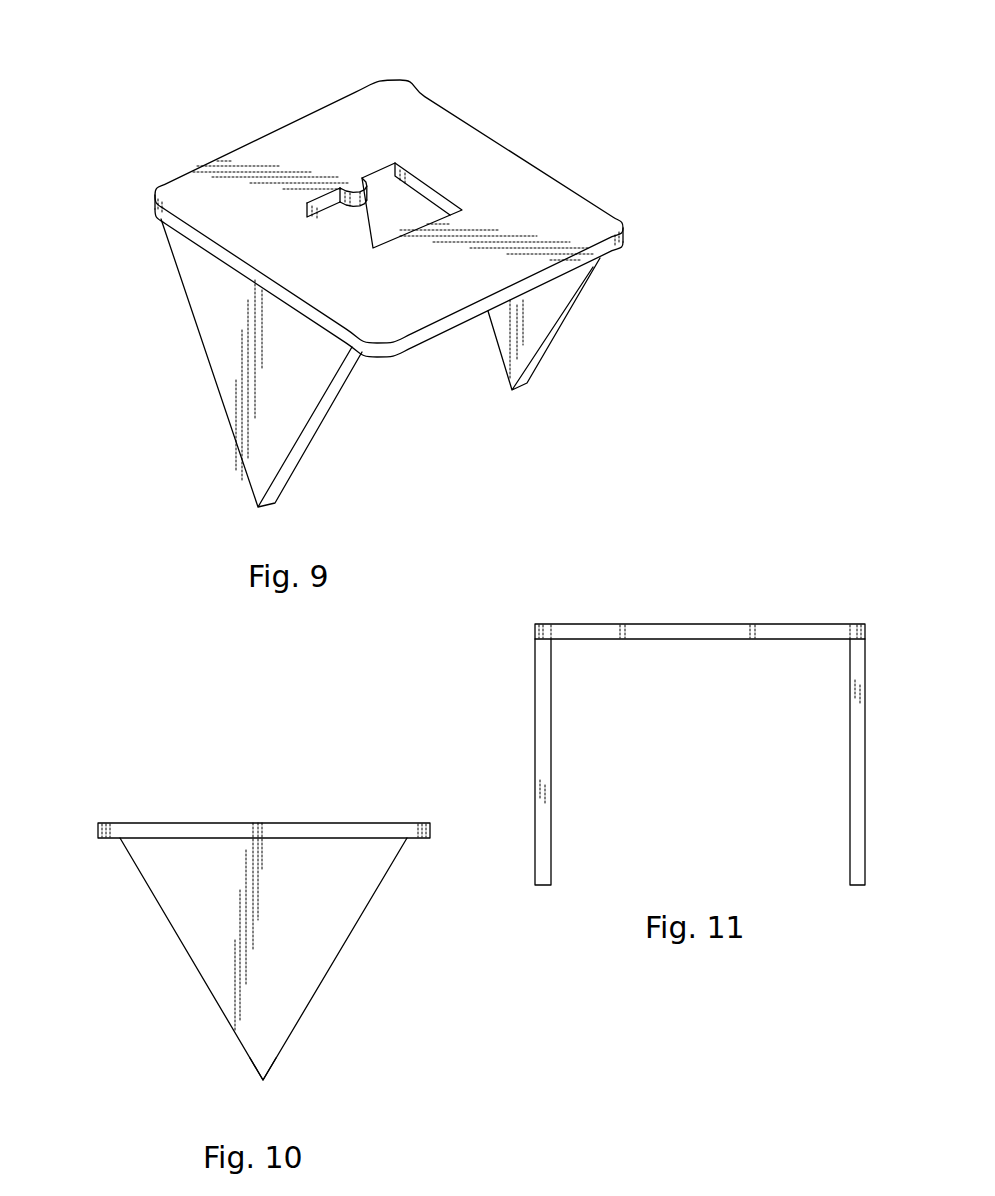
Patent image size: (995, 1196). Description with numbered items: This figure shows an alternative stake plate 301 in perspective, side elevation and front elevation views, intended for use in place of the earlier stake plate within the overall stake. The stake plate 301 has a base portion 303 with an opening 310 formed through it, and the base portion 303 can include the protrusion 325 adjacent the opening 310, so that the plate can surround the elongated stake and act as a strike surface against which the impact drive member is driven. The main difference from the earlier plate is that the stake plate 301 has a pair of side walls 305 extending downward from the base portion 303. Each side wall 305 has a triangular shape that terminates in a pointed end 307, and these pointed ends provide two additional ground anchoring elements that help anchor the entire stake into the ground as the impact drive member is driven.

In FIG. 9, the stake plate 301 is at (573, 128).
In FIG. 9, the base portion 303 is at (553, 203).
In FIG. 11, the base portion 303 is at (720, 625).
In FIG. 9, the side walls 305 is at (225, 332).
In FIG. 10, the side walls 305 is at (190, 897).
In FIG. 11, the side walls 305 is at (850, 757).
In FIG. 10, the pointed end 307 is at (263, 1080).
In FIG. 9, the opening 310 is at (405, 212).
In FIG. 9, the protrusion 325 is at (356, 193).